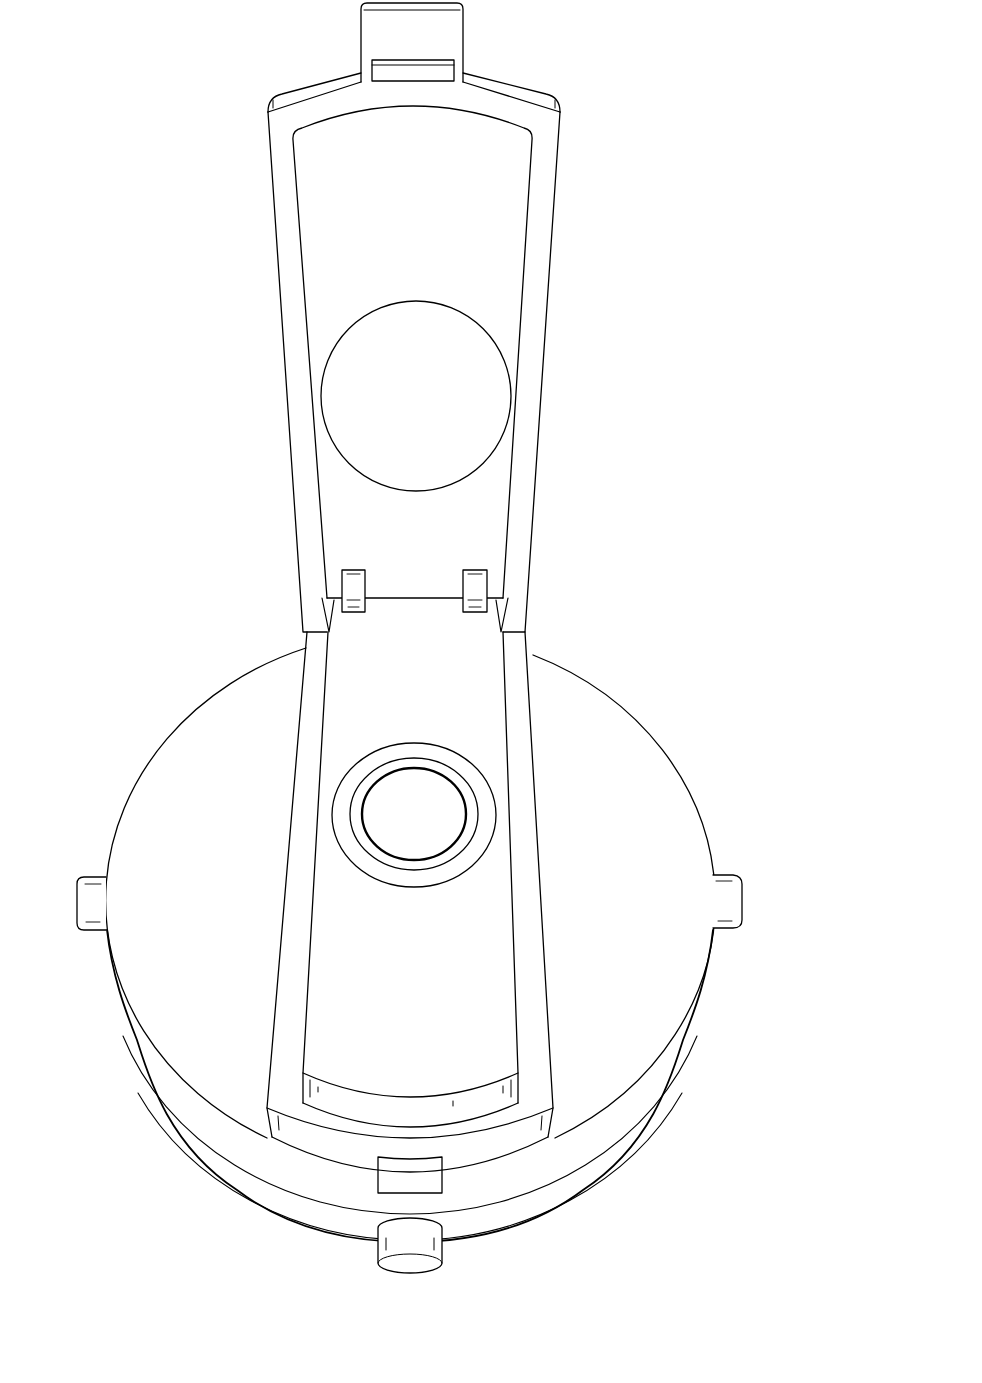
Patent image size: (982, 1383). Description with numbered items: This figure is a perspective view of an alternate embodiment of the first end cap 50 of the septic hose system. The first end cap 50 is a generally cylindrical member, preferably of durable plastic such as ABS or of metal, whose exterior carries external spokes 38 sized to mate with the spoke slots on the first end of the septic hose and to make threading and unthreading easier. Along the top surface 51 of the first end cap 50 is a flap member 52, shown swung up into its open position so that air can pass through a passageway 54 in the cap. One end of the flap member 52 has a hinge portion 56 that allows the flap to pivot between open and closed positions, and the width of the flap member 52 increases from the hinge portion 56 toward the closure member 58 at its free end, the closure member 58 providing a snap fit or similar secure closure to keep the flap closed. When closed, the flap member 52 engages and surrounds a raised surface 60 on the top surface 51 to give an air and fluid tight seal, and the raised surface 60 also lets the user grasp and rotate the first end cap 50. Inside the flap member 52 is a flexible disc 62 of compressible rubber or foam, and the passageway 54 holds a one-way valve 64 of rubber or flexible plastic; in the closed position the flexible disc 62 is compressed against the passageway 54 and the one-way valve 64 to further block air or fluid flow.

The external spokes 38 is at (725, 885).
The first end cap 50 is at (194, 685).
The top surface 51 is at (642, 820).
The flap member 52 is at (551, 247).
The passageway 54 is at (423, 758).
The hinge portion 56 is at (352, 583).
The closure member 58 is at (465, 22).
The raised surface 60 is at (298, 838).
The flexible disc 62 is at (488, 385).
The one-way valve 64 is at (437, 793).